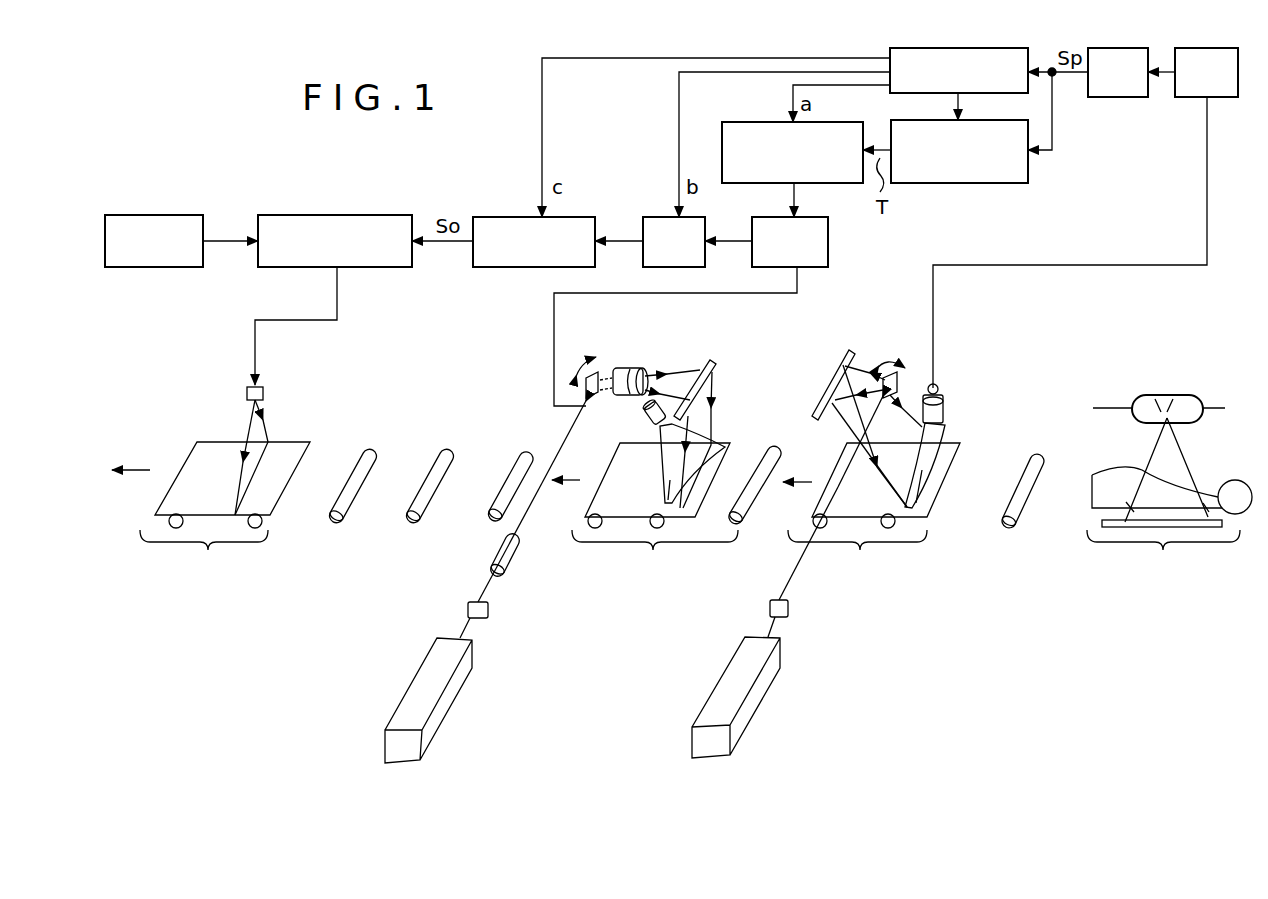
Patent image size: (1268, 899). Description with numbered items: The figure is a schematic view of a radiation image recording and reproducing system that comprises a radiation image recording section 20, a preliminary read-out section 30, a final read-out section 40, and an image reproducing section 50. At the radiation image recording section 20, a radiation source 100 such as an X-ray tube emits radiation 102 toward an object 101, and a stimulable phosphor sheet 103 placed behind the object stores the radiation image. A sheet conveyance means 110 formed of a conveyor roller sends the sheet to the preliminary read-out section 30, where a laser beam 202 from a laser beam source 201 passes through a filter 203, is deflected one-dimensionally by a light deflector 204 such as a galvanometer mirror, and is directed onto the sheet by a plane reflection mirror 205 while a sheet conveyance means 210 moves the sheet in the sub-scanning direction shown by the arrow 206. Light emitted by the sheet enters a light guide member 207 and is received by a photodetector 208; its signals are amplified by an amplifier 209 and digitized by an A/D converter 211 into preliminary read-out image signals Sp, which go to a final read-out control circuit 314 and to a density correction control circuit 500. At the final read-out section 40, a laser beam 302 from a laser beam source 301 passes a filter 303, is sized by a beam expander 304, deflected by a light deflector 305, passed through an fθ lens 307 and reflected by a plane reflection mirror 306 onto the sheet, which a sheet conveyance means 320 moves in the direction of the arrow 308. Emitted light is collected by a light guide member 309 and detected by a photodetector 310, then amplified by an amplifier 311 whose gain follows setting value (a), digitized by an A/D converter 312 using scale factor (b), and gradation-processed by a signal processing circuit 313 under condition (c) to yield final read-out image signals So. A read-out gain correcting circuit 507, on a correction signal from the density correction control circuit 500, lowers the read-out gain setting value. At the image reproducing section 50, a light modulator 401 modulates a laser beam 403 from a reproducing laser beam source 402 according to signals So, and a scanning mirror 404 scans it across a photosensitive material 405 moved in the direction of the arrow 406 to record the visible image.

The radiation image recording section 20 is at (1163, 555).
The preliminary read-out section 30 is at (857, 553).
The final read-out section 40 is at (655, 554).
The image reproducing section 50 is at (204, 545).
The radiation source 100 is at (1186, 396).
The object 101 is at (1175, 492).
The radiation 102 is at (1150, 452).
The stimulable phosphor sheet 103 is at (716, 458).
The sheet conveyance means 110 is at (1010, 530).
The laser beam source 201 is at (762, 693).
The laser beam 202 is at (775, 625).
The filter 203 is at (790, 610).
The light deflector 204 is at (914, 386).
The plane reflection mirror 205 is at (836, 362).
The arrow 206 is at (803, 480).
The light guide member 207 is at (942, 444).
The photodetector 208 is at (943, 406).
The amplifier 209 is at (1173, 97).
The sheet conveyance means 210 is at (890, 528).
The A/D converter 211 is at (1120, 97).
The laser beam source 301 is at (458, 692).
The laser beam 302 is at (472, 625).
The filter 303 is at (490, 610).
The beam expander 304 is at (512, 550).
The light deflector 305 is at (600, 375).
The plane reflection mirror 306 is at (716, 372).
The fθ lens 307 is at (634, 370).
The arrow 308 is at (584, 476).
The light guide member 309 is at (696, 437).
The photodetector 310 is at (647, 420).
The amplifier 311 is at (828, 241).
The A/D converter 312 is at (652, 216).
The signal processing circuit 313 is at (498, 216).
The final read-out control circuit 314 is at (996, 93).
The sheet conveyance means 320 is at (665, 527).
The light modulator 401 is at (393, 214).
The reproducing laser beam source 402 is at (199, 214).
The laser beam 403 is at (232, 244).
The scanning mirror 404 is at (265, 393).
The photosensitive material 405 is at (211, 456).
The arrow 406 is at (135, 470).
The density correction control circuit 500 is at (1000, 183).
The read-out gain correcting circuit 507 is at (754, 122).